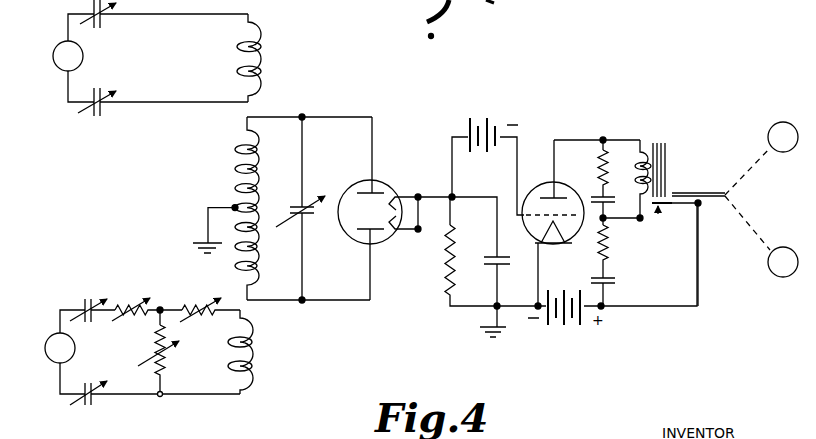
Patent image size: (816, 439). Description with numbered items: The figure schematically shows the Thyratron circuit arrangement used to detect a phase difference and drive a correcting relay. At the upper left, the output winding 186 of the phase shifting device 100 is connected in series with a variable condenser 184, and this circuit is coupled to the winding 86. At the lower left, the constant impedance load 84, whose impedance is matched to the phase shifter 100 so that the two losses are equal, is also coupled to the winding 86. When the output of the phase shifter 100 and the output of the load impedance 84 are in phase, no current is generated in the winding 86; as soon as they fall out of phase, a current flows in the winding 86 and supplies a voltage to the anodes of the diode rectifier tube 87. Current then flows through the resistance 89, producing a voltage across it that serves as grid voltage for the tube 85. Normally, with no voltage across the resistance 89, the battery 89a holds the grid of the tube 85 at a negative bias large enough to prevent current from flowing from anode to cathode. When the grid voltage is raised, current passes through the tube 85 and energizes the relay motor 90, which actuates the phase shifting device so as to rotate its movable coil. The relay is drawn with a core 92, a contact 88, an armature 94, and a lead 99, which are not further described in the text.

The phase shifting device 100 is at (63, 52).
The variable condenser 184 is at (95, 94).
The winding 186 is at (262, 58).
The winding 86 is at (237, 168).
The diode rectifier tube 87 is at (385, 190).
The resistance 89 is at (445, 279).
The battery 89a is at (466, 124).
The tube 85 is at (548, 188).
The relay motor 90 is at (633, 165).
The relay core 92 is at (668, 165).
The relay contact 88 is at (658, 214).
The relay armature 94 is at (676, 206).
The armature lead 99 is at (672, 205).
The constant impedance load 84 is at (58, 360).